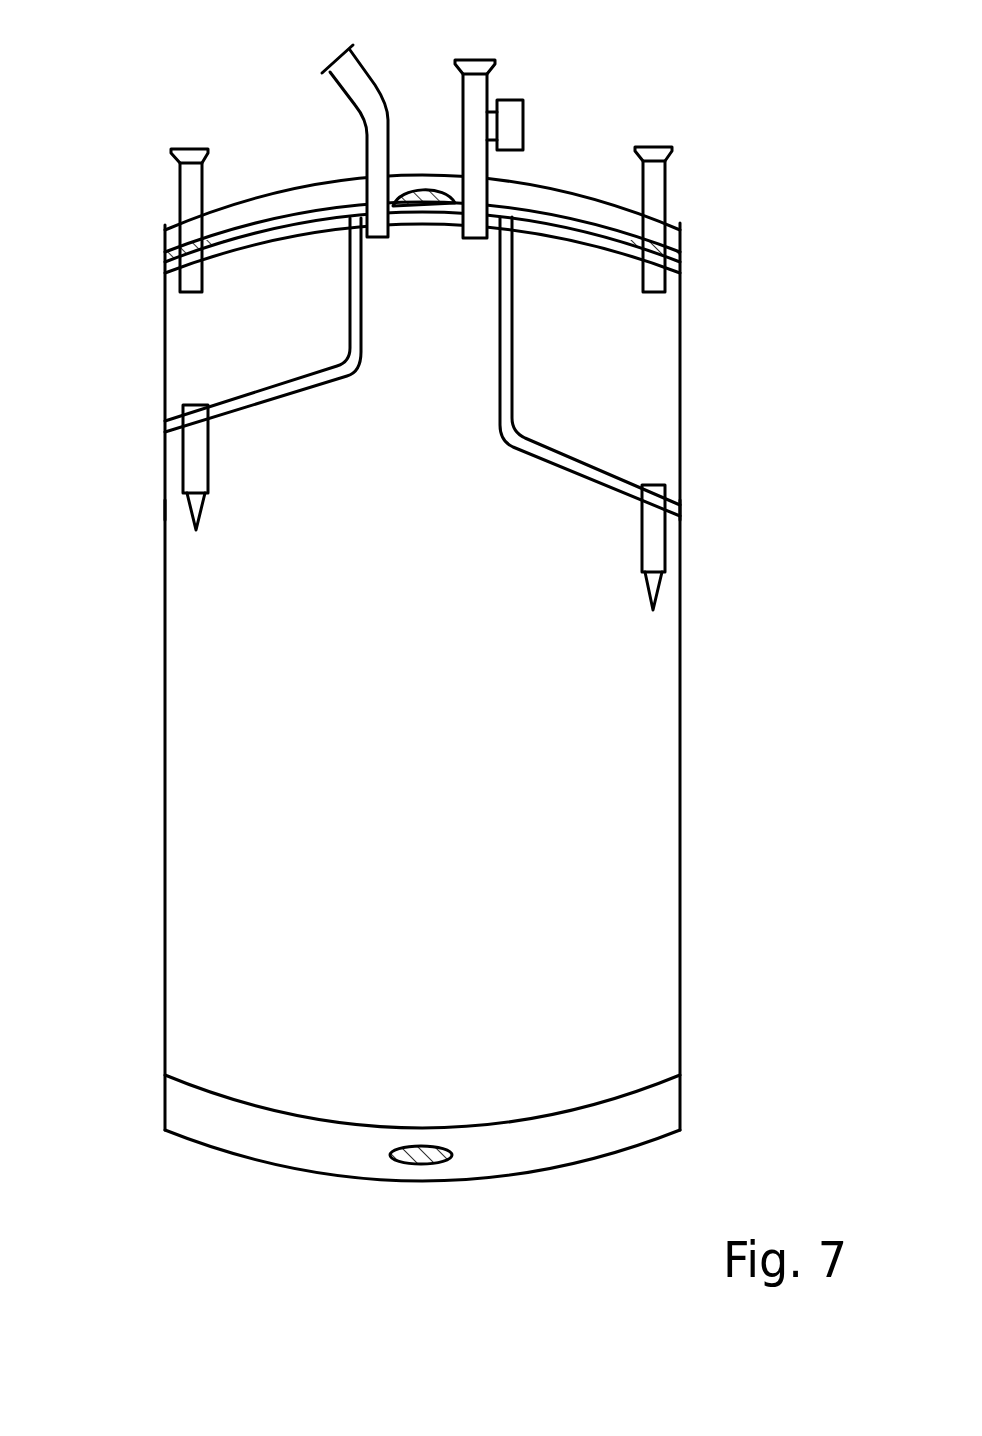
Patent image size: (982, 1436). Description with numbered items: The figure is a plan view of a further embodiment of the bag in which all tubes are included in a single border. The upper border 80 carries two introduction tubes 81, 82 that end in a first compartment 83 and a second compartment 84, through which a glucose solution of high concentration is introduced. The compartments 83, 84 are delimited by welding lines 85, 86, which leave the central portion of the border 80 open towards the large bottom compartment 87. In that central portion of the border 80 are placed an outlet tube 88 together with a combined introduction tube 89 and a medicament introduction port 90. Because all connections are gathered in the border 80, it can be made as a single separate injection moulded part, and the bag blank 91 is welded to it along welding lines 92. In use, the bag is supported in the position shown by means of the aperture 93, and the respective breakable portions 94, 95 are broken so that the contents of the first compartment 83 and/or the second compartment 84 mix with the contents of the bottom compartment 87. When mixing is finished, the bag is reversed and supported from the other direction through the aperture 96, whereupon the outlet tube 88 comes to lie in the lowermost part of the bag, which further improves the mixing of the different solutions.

The upper border 80 is at (682, 240).
The introduction tube 81 is at (667, 187).
The introduction tube 82 is at (177, 185).
The first compartment 83 is at (665, 342).
The second compartment 84 is at (197, 332).
The welding line 85 is at (610, 476).
The welding line 86 is at (243, 395).
The bottom compartment 87 is at (662, 887).
The outlet tube 88 is at (352, 96).
The combined introduction tube 89 is at (488, 83).
The medicament introduction port 90 is at (524, 128).
The bag blank 91 is at (680, 753).
The welding lines 92 is at (163, 258).
The aperture 93 is at (417, 190).
The breakable portion 94 is at (193, 513).
The breakable portion 95 is at (660, 593).
The aperture 96 is at (417, 1167).